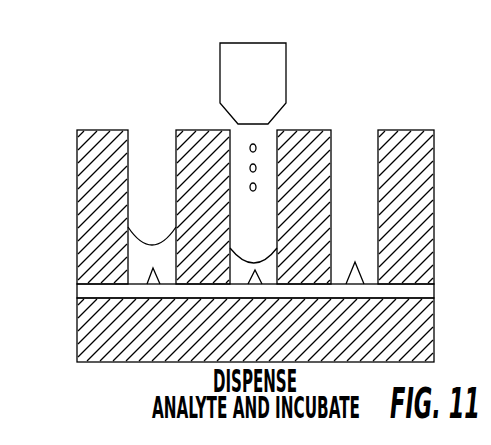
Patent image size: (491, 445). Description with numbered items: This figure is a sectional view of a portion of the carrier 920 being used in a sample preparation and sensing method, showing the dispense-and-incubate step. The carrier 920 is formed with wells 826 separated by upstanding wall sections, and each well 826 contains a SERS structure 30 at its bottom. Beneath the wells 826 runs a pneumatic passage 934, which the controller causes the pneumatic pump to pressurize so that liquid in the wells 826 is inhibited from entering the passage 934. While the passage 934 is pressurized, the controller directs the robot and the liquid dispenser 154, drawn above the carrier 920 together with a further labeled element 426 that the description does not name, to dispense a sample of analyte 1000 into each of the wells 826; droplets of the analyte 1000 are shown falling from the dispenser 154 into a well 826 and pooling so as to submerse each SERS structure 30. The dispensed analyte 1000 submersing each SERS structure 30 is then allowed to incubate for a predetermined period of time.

The carrier 920 is at (72, 130).
The wells 826 is at (128, 131).
The dispenser 426 is at (250, 63).
The liquid dispenser 154 is at (286, 72).
The analyte 1000 is at (253, 145).
The SERS structure 30 is at (361, 263).
The pneumatic passage 934 is at (77, 298).